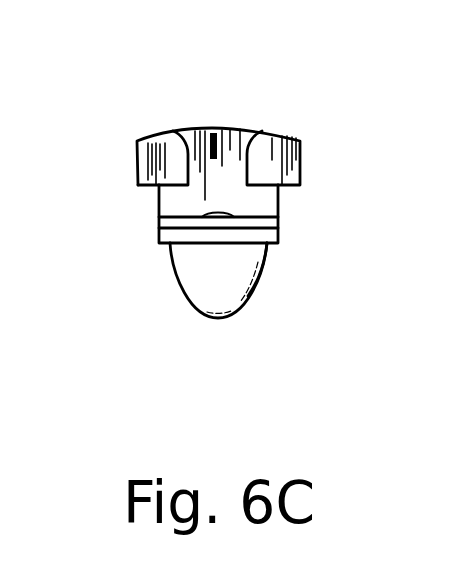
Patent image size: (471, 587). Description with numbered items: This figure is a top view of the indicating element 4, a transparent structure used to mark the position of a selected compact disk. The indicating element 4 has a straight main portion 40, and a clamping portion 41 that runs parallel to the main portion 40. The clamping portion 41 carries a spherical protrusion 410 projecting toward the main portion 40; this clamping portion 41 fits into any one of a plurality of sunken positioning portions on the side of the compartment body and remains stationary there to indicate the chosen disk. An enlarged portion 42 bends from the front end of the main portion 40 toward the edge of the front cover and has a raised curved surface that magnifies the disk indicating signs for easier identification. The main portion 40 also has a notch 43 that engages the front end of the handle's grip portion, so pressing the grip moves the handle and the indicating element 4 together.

The indicating element 4 is at (236, 226).
The main portion 40 is at (173, 204).
The clamping portion 41 is at (268, 258).
The enlarged portion 42 is at (192, 261).
The notch 43 is at (212, 130).
The spherical protrusion 410 is at (228, 215).